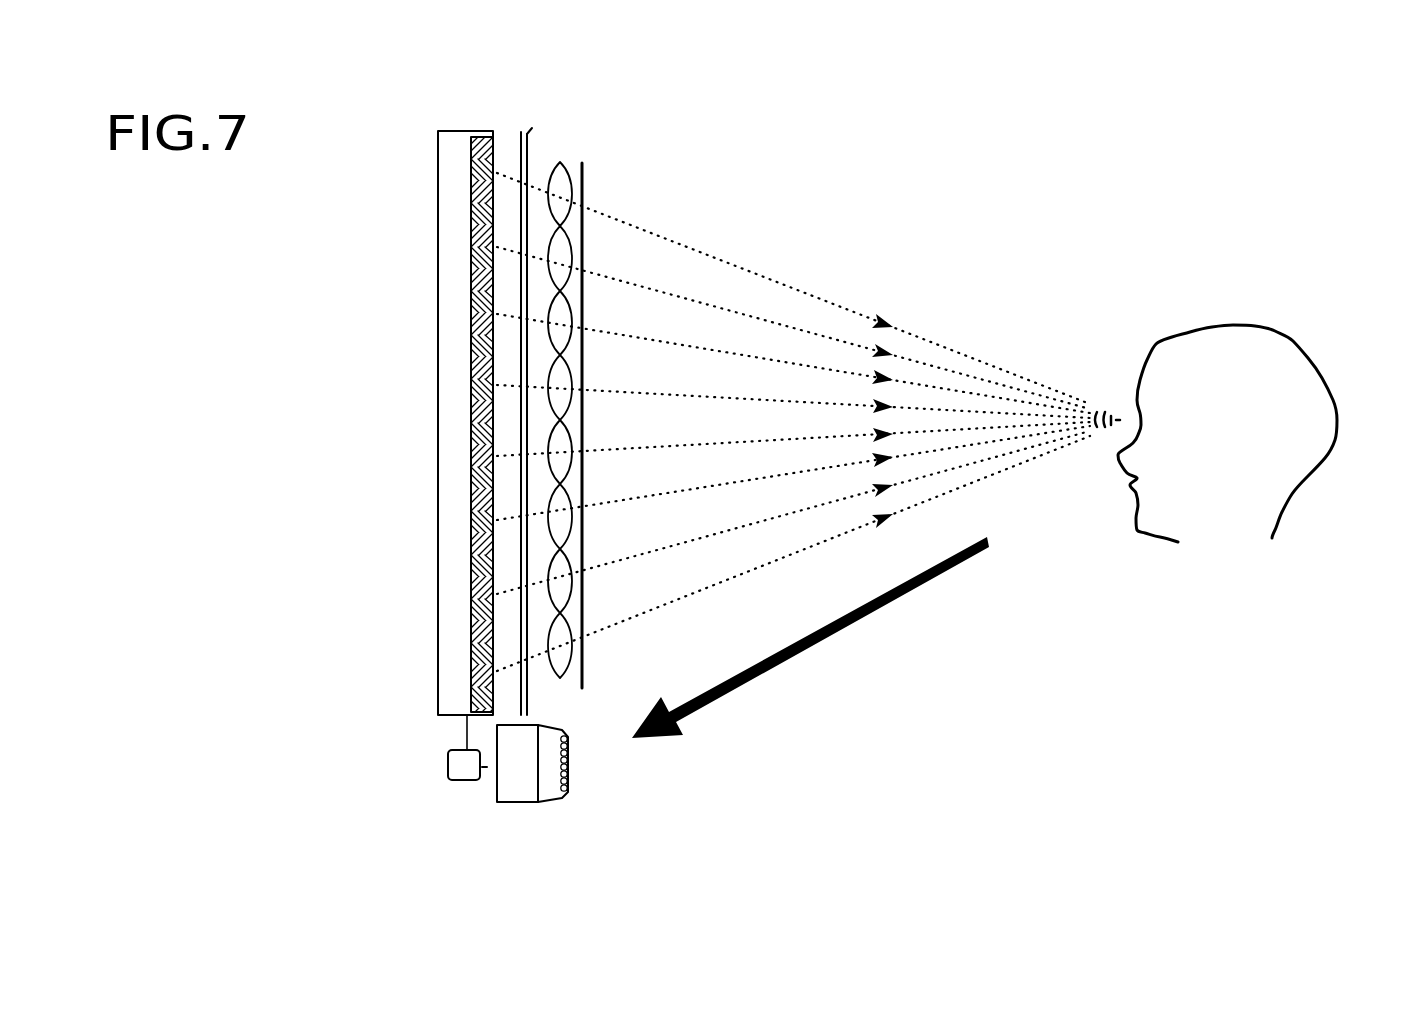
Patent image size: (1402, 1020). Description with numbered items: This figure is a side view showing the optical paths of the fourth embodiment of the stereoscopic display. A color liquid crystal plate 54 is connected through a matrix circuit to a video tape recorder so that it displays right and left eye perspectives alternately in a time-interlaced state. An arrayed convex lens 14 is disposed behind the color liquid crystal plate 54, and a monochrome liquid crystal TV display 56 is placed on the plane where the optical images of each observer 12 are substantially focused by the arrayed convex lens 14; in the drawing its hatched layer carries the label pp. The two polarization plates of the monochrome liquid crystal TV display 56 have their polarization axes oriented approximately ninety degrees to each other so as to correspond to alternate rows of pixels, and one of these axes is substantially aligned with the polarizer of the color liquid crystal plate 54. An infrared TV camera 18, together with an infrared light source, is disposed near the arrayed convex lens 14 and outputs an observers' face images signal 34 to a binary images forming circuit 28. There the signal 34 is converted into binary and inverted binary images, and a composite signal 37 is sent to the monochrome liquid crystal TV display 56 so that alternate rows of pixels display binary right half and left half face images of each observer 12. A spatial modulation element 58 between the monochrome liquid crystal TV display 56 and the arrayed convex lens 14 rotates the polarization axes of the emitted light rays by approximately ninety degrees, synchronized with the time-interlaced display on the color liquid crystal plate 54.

The observer 12 is at (1318, 522).
The arrayed convex lens 14 is at (565, 160).
The infrared TV camera 18 is at (557, 813).
The binary images forming circuit 28 is at (460, 790).
The observers' face images signal 34 is at (492, 775).
The composite signal 37 is at (457, 733).
The color liquid crystal plate 54 is at (592, 163).
The monochrome liquid crystal TV display 56 is at (435, 248).
The spatial modulation element 58 is at (532, 125).
The polarizing plate (hatched layer) pp is at (484, 137).